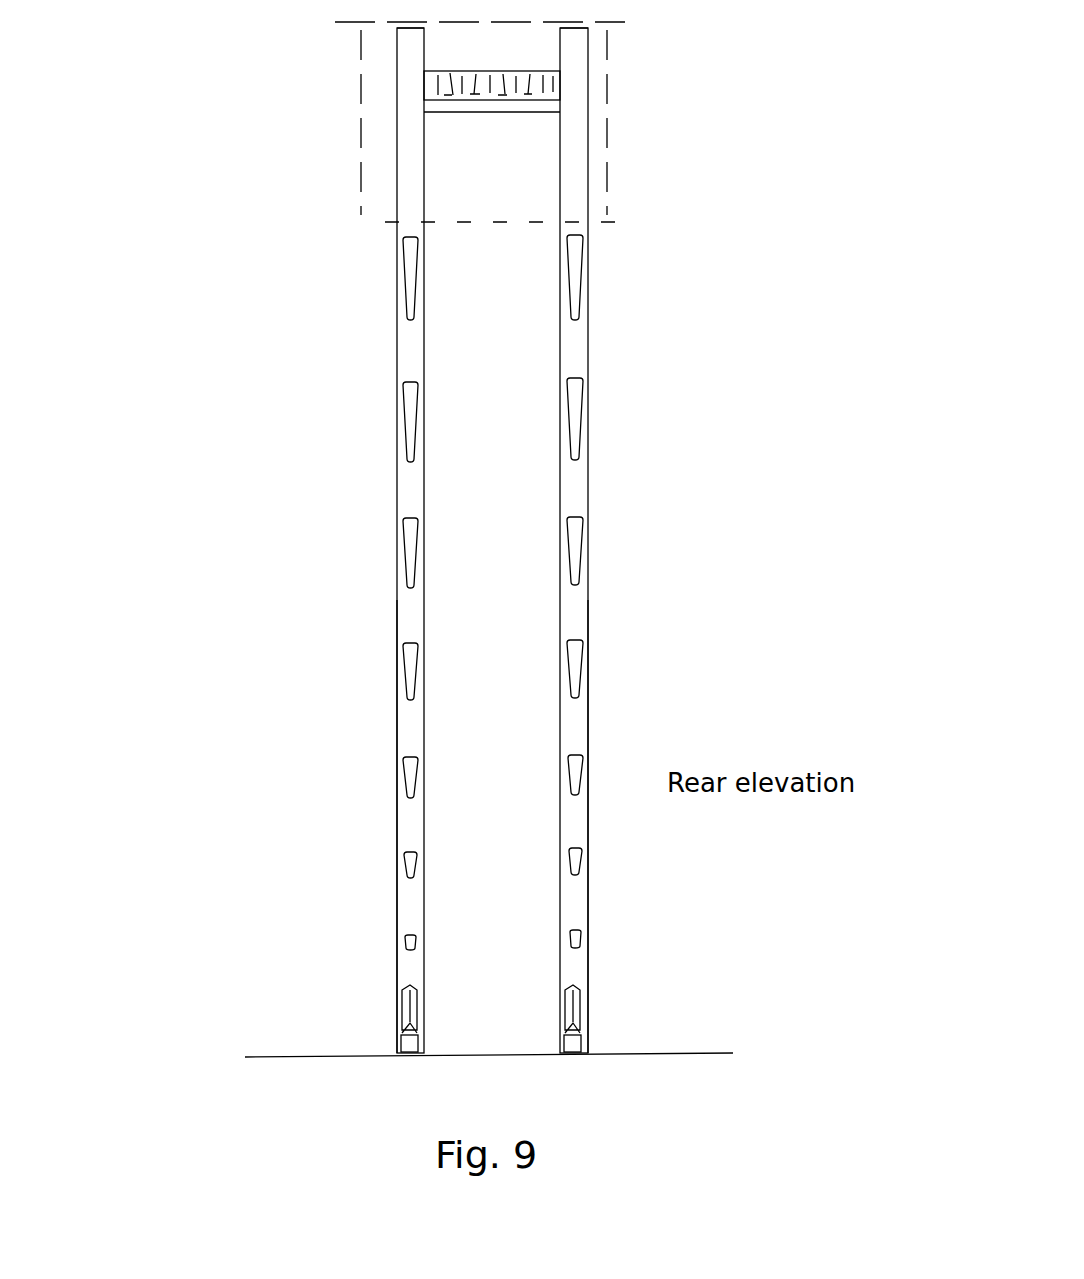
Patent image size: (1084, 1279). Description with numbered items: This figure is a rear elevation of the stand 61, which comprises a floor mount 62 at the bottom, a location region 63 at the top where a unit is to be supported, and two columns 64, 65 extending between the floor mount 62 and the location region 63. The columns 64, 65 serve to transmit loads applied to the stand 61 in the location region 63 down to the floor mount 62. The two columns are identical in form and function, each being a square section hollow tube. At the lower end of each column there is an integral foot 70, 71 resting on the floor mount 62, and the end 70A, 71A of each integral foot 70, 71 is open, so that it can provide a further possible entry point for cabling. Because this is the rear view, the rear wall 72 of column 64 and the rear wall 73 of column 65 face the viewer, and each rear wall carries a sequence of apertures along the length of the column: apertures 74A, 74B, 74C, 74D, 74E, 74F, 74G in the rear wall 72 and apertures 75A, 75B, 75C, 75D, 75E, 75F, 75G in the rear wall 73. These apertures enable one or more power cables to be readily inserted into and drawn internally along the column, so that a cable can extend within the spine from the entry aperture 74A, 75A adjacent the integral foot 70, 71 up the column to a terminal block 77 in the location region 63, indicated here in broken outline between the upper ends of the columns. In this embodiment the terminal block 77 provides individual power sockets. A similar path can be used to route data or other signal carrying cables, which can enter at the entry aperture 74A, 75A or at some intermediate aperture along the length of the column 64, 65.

The stand 61 is at (590, 377).
The floor mount 62 is at (645, 1050).
The location region 63 is at (603, 115).
The column 64 is at (405, 500).
The column 65 is at (570, 493).
The integral foot 70 is at (402, 1007).
The end of integral foot 70A is at (395, 1047).
The integral foot 71 is at (577, 997).
The end of integral foot 71A is at (572, 1033).
The rear wall 72 is at (407, 818).
The rear wall 73 is at (588, 827).
The entry aperture 74A is at (407, 938).
The aperture 74B is at (407, 863).
The aperture 74C is at (407, 770).
The aperture 74D is at (407, 667).
The aperture 74E is at (407, 547).
The aperture 74F is at (407, 420).
The aperture 74G is at (407, 285).
The entry aperture 75A is at (565, 945).
The aperture 75B is at (570, 862).
The aperture 75C is at (570, 770).
The aperture 75D is at (570, 653).
The aperture 75E is at (570, 532).
The aperture 75F is at (570, 408).
The aperture 75G is at (575, 262).
The terminal block 77 is at (537, 83).